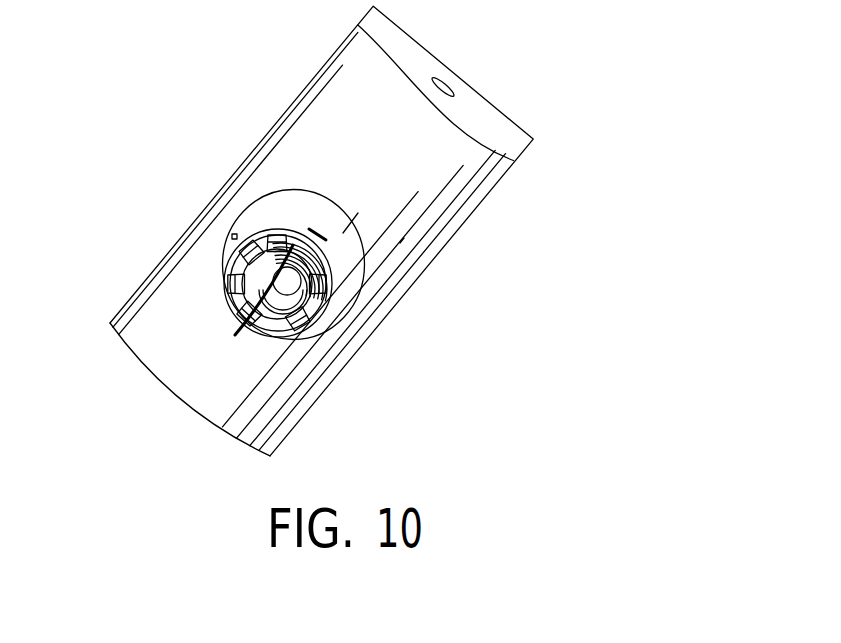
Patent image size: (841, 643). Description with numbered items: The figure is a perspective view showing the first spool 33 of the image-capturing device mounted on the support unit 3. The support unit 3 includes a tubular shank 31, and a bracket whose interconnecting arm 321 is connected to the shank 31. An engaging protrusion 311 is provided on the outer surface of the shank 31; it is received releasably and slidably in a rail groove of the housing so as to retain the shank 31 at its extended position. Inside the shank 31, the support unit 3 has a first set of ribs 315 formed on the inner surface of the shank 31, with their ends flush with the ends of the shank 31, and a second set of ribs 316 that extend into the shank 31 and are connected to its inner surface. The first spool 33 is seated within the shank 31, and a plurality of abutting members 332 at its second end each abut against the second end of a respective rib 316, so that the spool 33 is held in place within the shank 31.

The support unit 3 is at (498, 213).
The shank 31 is at (357, 250).
The engaging protrusion 311 is at (235, 237).
The ribs (first set) 315 is at (326, 271).
The ribs (second set) 316 is at (286, 240).
The interconnecting arm 321 is at (330, 93).
The first spool 33 is at (290, 298).
The abutting members 332 is at (272, 236).